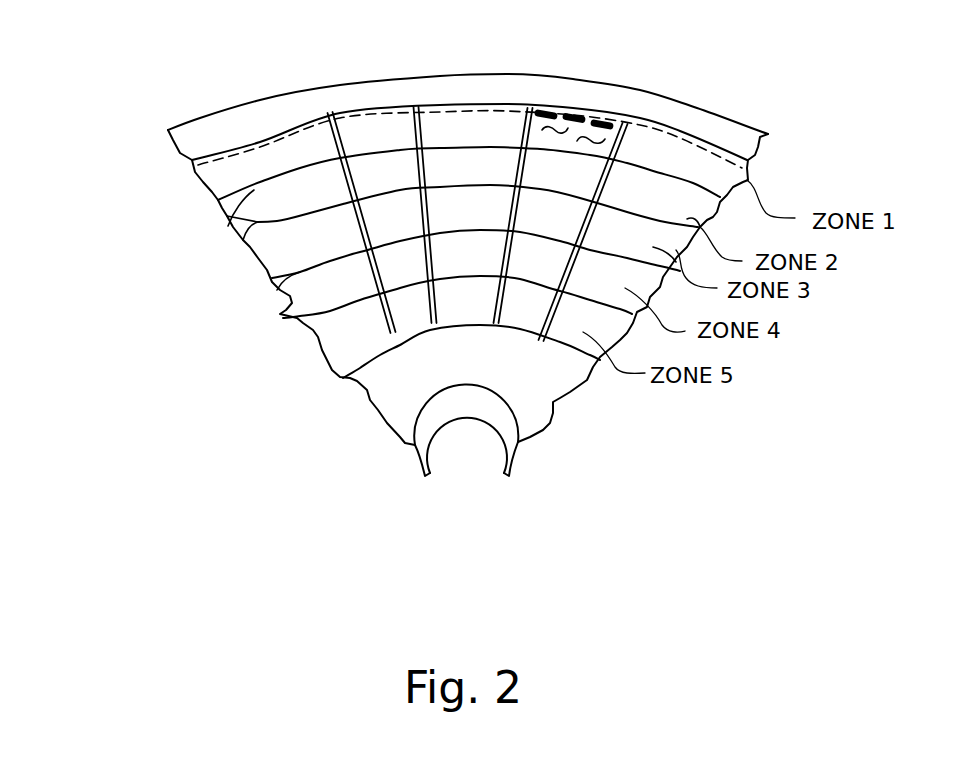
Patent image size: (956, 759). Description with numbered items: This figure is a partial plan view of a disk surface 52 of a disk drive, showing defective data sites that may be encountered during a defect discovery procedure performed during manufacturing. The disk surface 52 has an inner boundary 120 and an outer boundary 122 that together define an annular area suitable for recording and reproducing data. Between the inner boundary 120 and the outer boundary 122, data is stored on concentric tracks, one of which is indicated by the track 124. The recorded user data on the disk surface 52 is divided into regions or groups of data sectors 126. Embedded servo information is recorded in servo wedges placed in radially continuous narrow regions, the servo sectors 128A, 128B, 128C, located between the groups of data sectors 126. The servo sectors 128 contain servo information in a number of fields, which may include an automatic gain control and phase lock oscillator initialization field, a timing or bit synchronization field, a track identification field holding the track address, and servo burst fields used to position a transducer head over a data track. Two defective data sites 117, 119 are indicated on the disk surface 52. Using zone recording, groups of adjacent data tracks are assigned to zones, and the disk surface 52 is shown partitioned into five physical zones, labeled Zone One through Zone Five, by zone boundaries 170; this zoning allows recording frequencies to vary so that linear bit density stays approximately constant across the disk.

The disk surface 52 is at (131, 83).
The defective data site 117 is at (542, 130).
The defective data site 119 is at (587, 141).
The inner boundary 120 is at (360, 383).
The outer boundary 122 is at (505, 107).
The concentric track 124 is at (473, 112).
The data sectors 126 is at (581, 100).
The servo sectors 128 is at (627, 123).
The servo sector 128A is at (330, 112).
The servo sector 128B is at (418, 107).
The servo sector 128C is at (531, 107).
The zone boundaries 170 is at (255, 188).